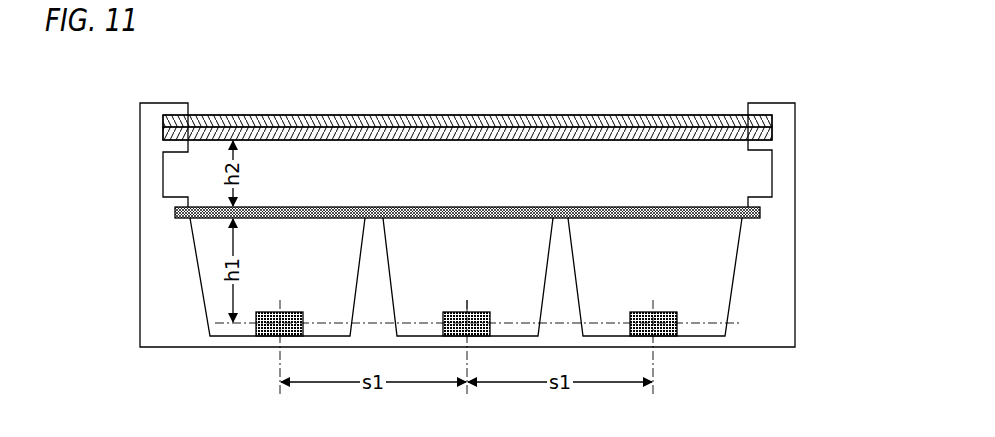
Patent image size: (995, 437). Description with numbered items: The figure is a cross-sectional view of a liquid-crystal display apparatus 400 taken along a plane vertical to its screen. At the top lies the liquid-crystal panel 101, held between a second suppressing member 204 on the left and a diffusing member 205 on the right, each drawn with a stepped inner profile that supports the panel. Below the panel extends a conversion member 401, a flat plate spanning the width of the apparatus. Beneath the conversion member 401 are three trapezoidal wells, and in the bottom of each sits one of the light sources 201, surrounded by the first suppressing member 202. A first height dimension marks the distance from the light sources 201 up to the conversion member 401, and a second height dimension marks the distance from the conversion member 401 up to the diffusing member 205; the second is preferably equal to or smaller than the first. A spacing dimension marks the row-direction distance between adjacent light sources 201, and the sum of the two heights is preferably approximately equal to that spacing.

The liquid-crystal panel 101 is at (292, 115).
The light sources 201 is at (455, 310).
The first suppressing member 202 is at (575, 290).
The second suppressing member 204 is at (150, 158).
The diffusing member 205 is at (768, 115).
The liquid-crystal display apparatus 400 is at (467, 306).
The conversion member 401 is at (760, 210).